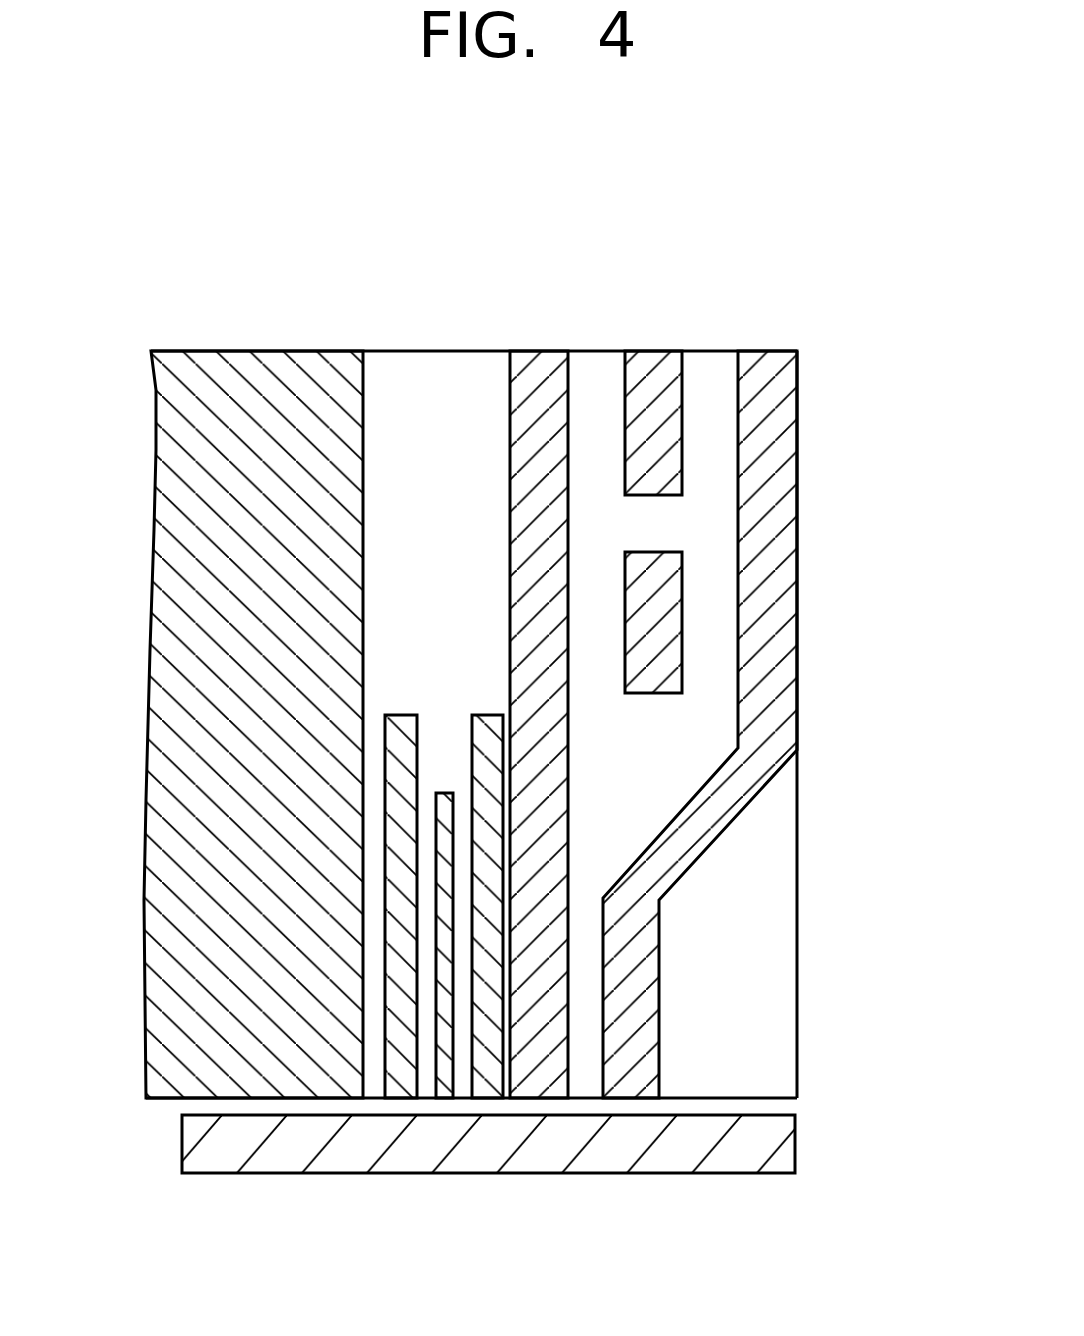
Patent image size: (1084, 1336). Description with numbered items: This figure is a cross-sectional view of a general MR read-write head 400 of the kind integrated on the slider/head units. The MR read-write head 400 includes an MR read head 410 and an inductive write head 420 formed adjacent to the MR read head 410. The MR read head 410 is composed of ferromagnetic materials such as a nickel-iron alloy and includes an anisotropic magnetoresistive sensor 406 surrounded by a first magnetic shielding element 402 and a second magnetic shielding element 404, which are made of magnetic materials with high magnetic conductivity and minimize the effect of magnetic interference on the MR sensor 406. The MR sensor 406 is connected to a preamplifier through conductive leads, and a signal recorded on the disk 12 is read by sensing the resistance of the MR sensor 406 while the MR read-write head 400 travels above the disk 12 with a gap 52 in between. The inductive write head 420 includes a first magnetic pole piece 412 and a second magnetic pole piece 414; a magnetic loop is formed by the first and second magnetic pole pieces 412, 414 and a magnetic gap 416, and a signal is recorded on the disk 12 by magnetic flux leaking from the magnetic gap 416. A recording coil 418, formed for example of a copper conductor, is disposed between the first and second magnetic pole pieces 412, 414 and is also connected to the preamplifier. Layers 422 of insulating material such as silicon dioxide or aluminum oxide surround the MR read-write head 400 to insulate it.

The MR read-write head 400 is at (822, 331).
The first magnetic shielding element 402 is at (400, 1085).
The second magnetic shielding element 404 is at (487, 1085).
The anisotropic magnetoresistive sensor 406 is at (447, 1085).
The MR read head 410 is at (457, 601).
The first magnetic pole piece 412 is at (510, 518).
The second magnetic pole piece 414 is at (797, 447).
The magnetic gap 416 is at (580, 1085).
The recording coil 418 is at (653, 351).
The inductive write head 420 is at (170, 892).
The insulating layers 422 is at (467, 397).
The gap 52 is at (720, 1110).
The disk 12 is at (795, 1143).